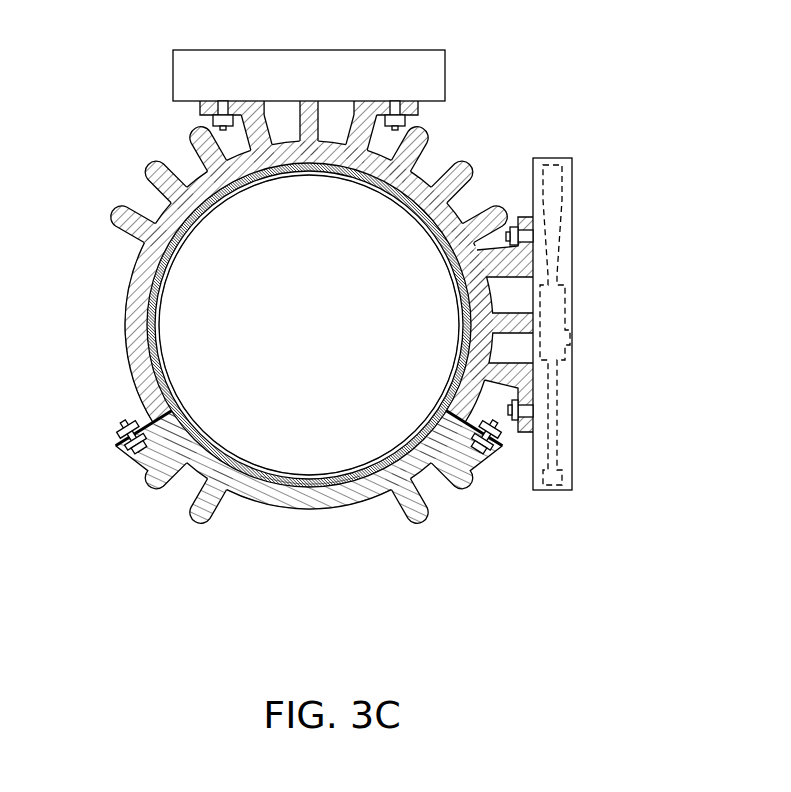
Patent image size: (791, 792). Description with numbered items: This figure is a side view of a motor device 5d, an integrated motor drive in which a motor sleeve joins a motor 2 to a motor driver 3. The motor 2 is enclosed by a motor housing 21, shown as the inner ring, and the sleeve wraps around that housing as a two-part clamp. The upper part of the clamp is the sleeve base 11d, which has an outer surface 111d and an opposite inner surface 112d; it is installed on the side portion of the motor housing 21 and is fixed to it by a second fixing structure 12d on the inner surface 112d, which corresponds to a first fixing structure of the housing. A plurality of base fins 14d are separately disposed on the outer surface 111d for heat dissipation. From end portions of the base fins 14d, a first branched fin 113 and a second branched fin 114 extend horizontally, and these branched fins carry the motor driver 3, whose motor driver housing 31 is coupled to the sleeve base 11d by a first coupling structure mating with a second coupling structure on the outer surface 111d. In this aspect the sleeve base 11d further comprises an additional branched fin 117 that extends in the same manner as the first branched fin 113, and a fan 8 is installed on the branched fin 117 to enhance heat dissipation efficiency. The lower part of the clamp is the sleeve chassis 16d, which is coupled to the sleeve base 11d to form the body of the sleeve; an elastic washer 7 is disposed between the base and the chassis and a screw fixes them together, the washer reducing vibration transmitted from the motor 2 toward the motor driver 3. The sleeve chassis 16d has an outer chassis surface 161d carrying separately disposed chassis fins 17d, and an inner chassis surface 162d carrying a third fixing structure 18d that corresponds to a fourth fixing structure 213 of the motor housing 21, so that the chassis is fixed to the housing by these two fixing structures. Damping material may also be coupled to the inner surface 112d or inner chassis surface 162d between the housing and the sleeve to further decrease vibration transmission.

The motor 2 is at (361, 447).
The motor driver 3 is at (202, 73).
The motor driver housing 31 is at (573, 394).
The motor device 5d is at (568, 85).
The elastic washer 7 is at (118, 442).
The fan 8 is at (566, 190).
The sleeve base 11d is at (133, 297).
The outer surface 111d is at (125, 342).
The inner surface 112d is at (147, 370).
The first branched fin 113 is at (207, 105).
The second branched fin 114 is at (416, 110).
The branched fin 117 is at (522, 228).
The second fixing structure 12d is at (190, 183).
The base fins 14d is at (117, 212).
The sleeve chassis 16d is at (253, 488).
The outer chassis surface 161d is at (292, 509).
The inner chassis surface 162d is at (333, 488).
The chassis fins 17d is at (150, 487).
The third fixing structure 18d is at (430, 463).
The motor housing 21 is at (168, 262).
The fourth fixing structure 213 is at (189, 222).